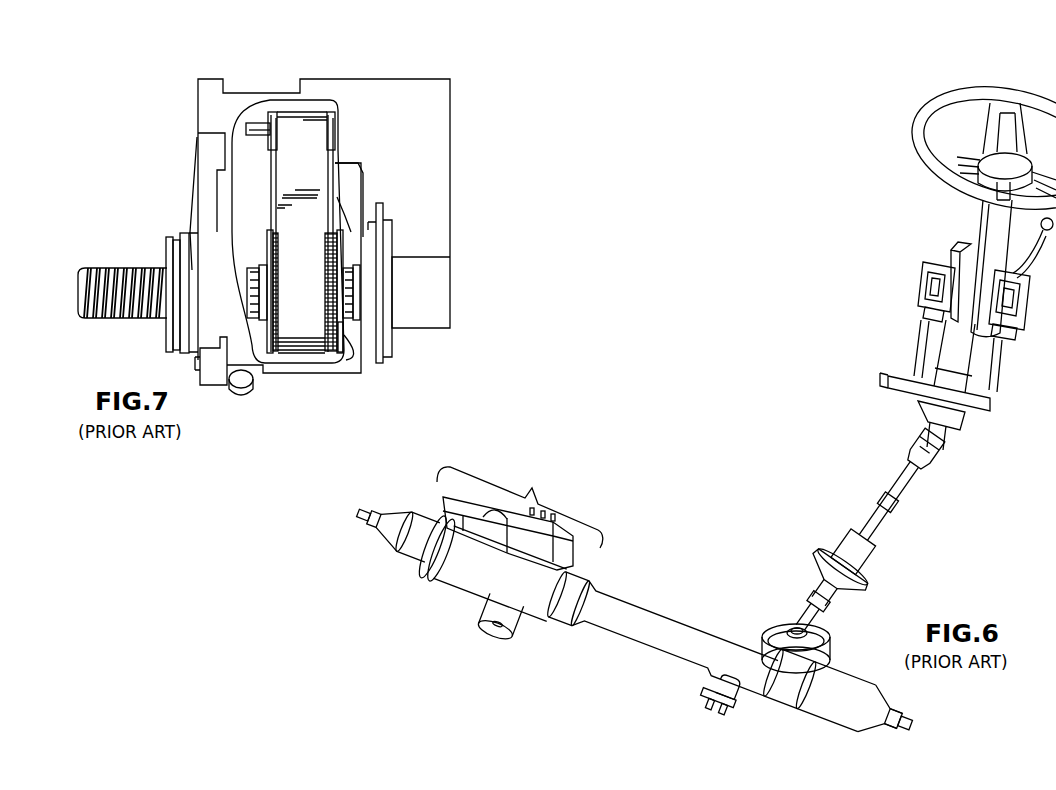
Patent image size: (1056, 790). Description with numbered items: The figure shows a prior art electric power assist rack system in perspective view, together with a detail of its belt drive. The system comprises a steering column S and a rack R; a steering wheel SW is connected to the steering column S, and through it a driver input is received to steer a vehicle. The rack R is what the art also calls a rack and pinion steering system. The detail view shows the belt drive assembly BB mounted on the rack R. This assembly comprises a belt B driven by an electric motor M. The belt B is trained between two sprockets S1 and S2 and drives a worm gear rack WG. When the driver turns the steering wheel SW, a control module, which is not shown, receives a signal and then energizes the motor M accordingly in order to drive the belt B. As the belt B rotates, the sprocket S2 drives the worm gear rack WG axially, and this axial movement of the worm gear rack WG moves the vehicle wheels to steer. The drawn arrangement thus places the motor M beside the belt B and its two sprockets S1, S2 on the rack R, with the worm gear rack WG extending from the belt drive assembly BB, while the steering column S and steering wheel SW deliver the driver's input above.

In FIG. 7, the electric motor M is at (400, 97).
In FIG. 7, the worm gear rack WG is at (122, 267).
In FIG. 7, the belt box / belt drive assembly BB is at (281, 78).
In FIG. 6, the belt box / belt drive assembly BB is at (588, 558).
In FIG. 7, the belt B is at (313, 173).
In FIG. 7, the sprocket S1 is at (278, 104).
In FIG. 7, the sprocket S2 is at (340, 332).
In FIG. 6, the steering wheel SW is at (1006, 95).
In FIG. 6, the steering column S is at (882, 512).
In FIG. 6, the rack R is at (633, 640).